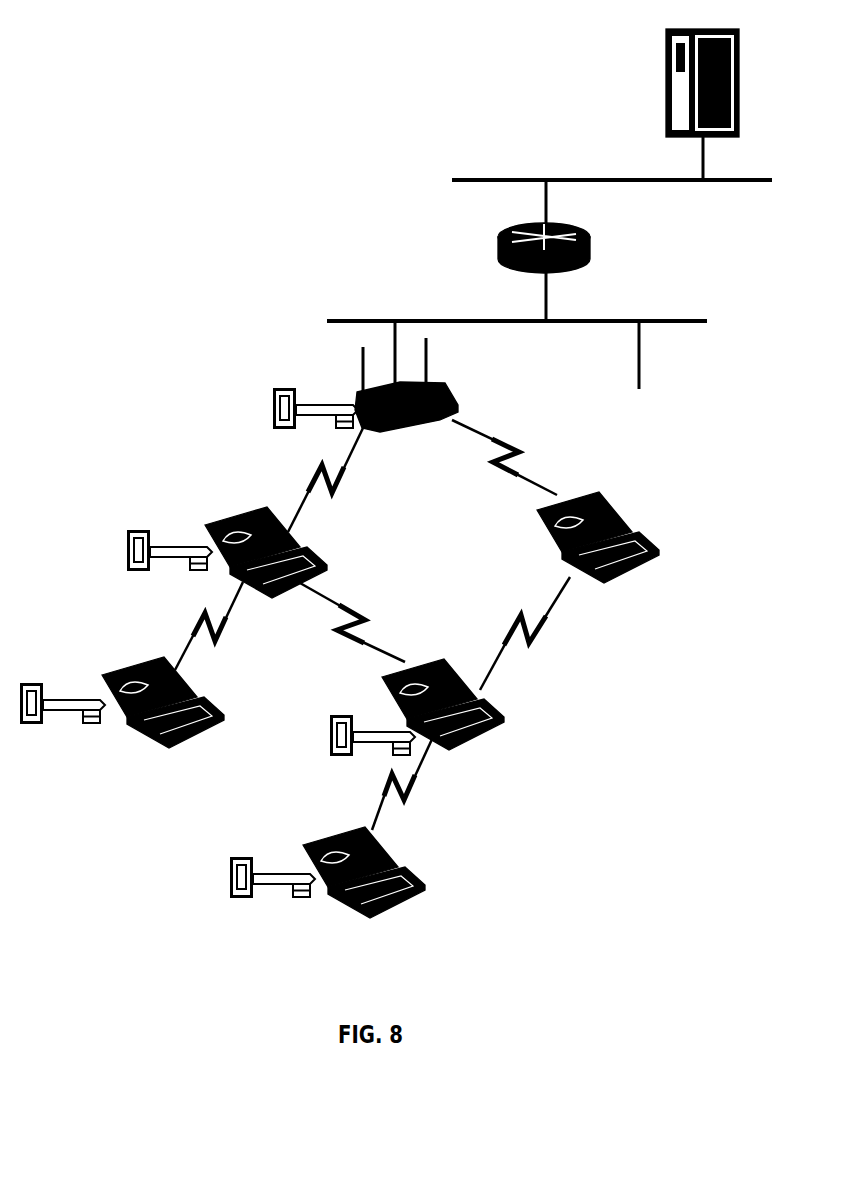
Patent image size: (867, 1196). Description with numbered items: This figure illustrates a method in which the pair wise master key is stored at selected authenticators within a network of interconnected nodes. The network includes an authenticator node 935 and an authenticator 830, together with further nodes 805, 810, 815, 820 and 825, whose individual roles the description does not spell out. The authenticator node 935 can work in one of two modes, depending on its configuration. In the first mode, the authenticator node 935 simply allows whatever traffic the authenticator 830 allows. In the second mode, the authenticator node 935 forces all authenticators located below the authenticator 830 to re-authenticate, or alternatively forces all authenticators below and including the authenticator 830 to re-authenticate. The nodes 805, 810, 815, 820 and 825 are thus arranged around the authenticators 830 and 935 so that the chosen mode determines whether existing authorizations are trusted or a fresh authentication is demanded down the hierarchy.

The mobile device (laptop) with key 805 is at (346, 844).
The mobile device (laptop) with key 810 is at (148, 674).
The wireless access point 815 is at (407, 407).
The mobile device (laptop) with key 820 is at (250, 526).
The server 825 is at (738, 82).
The authenticator 830 is at (466, 726).
The authenticator node 935 is at (618, 527).